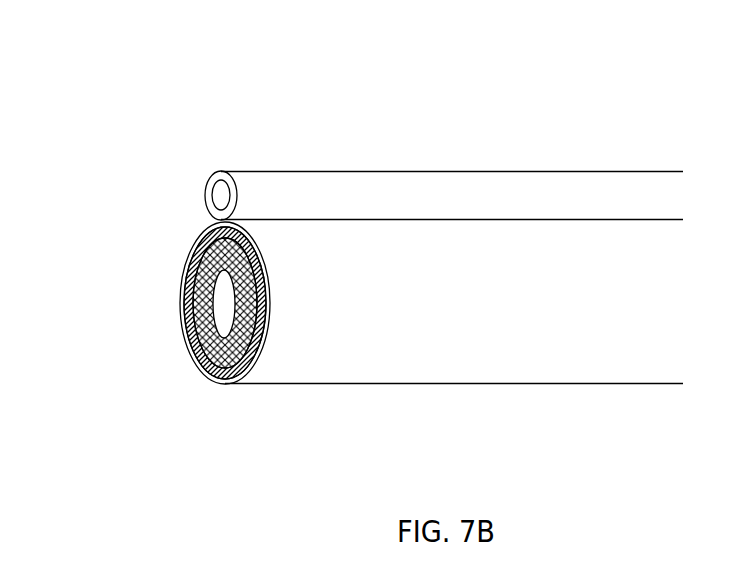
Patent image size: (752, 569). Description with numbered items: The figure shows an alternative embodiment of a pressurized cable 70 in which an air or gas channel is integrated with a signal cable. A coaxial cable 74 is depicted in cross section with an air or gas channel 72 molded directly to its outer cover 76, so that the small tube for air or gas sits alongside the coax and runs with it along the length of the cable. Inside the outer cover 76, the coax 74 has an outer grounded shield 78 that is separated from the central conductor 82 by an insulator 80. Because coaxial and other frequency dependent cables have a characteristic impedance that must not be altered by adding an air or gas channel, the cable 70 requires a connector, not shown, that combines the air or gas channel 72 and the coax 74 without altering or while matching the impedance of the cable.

The cable 70 is at (310, 97).
The air or gas channel 72 is at (215, 172).
The coaxial cable 74 is at (408, 350).
The outer cover 76 is at (199, 236).
The outer grounded shield 78 is at (193, 283).
The insulator 80 is at (202, 375).
The conductor 82 is at (222, 303).